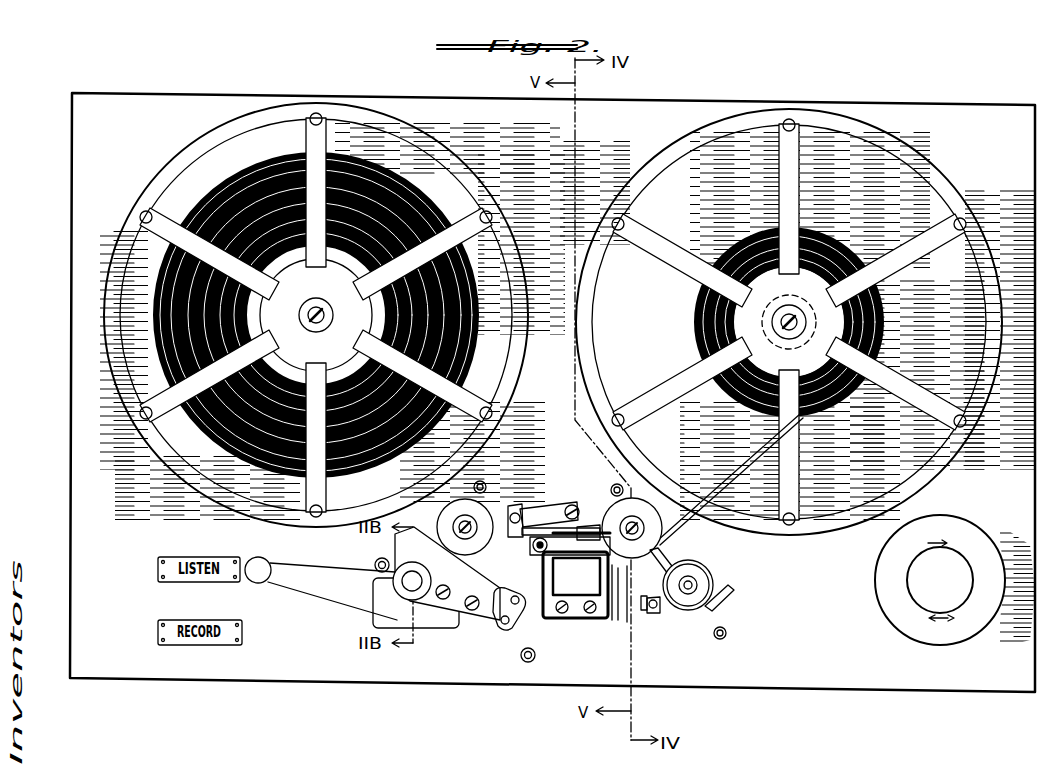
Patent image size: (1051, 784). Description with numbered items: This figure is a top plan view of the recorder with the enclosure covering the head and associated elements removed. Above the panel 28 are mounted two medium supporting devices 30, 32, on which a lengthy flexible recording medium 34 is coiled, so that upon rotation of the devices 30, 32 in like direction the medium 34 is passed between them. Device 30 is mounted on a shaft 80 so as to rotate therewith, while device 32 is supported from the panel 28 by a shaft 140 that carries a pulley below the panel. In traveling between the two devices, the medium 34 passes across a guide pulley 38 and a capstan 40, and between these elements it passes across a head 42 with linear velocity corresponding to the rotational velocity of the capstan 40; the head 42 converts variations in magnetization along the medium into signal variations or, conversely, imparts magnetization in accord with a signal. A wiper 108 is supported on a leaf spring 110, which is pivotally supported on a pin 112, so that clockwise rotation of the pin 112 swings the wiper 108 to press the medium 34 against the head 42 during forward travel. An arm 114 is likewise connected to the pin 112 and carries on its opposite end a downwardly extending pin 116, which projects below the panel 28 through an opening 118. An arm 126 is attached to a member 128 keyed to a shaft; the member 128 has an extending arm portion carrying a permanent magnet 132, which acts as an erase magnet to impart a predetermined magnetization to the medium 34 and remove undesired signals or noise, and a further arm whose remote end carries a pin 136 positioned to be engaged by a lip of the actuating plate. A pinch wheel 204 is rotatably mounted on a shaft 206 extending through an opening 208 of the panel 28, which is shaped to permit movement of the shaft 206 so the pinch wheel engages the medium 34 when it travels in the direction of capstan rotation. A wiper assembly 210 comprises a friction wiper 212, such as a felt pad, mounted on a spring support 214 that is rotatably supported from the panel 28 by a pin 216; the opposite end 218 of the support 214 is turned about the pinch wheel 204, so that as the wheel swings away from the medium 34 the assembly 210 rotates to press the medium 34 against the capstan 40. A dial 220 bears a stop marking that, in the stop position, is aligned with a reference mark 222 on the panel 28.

The panel 28 is at (668, 92).
The medium supporting device 30 is at (316, 300).
The medium supporting device 32 is at (789, 306).
The flexible recording medium 34 is at (688, 524).
The guide pulley 38 is at (482, 514).
The capstan 40 is at (651, 519).
The head 42 is at (571, 588).
The shaft 80 is at (318, 308).
The wiper 108 is at (584, 516).
The leaf spring 110 is at (531, 527).
The pin 112 is at (518, 509).
The arm 114 is at (551, 505).
The pin 116 is at (574, 506).
The opening 118 is at (581, 521).
The arm 126 is at (292, 584).
The member 128 is at (455, 586).
The permanent magnet 132 is at (496, 614).
The pin 136 is at (403, 580).
The shaft 140 is at (791, 313).
The pinch wheel 204 is at (696, 567).
The shaft 206 is at (699, 583).
The opening 208 is at (667, 560).
The wiper assembly 210 is at (646, 612).
The friction wiper 212 is at (614, 617).
The spring support 214 is at (626, 622).
The pin 216 is at (661, 612).
The opposite end of support 218 is at (712, 608).
The dial 220 is at (883, 586).
The reference mark 222 is at (940, 655).